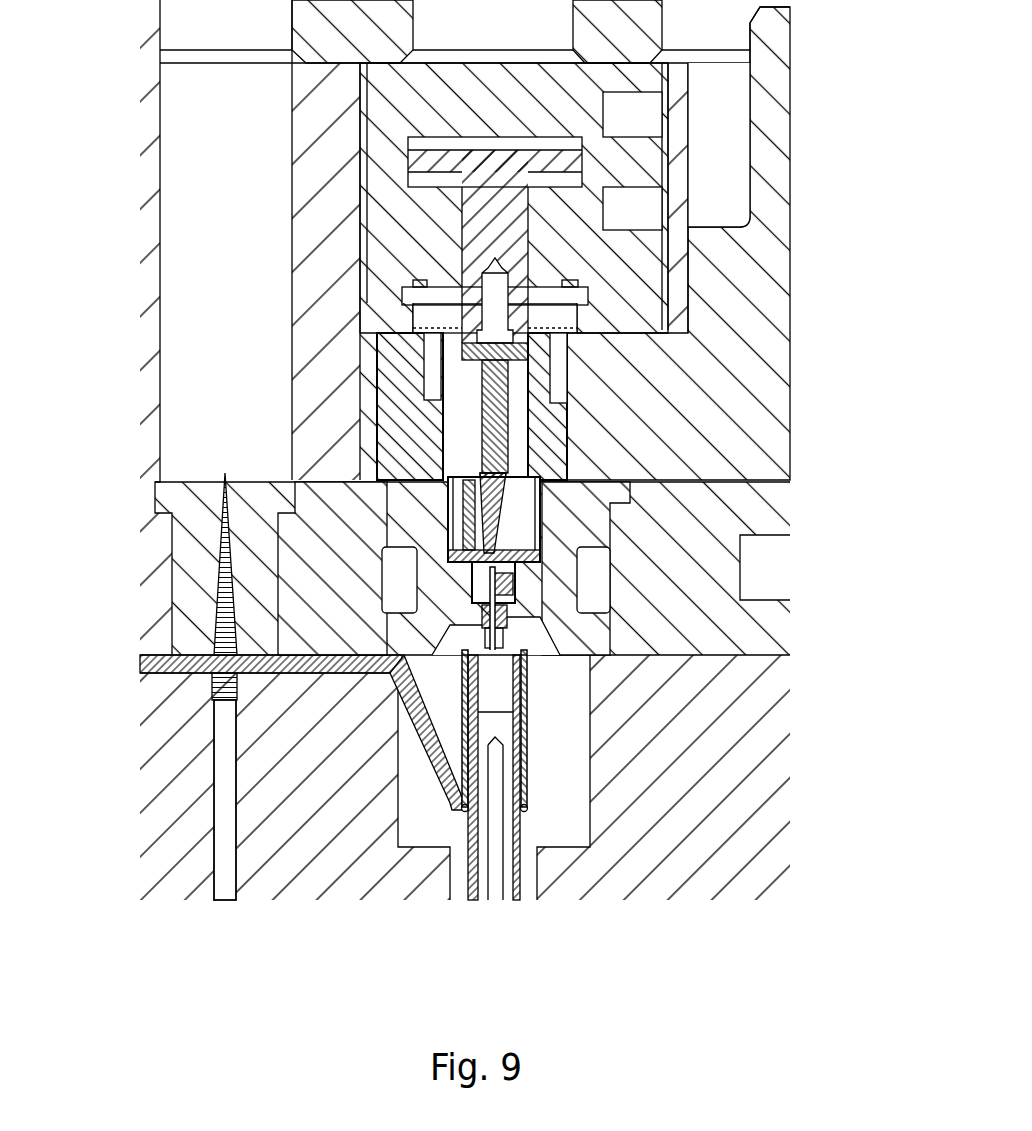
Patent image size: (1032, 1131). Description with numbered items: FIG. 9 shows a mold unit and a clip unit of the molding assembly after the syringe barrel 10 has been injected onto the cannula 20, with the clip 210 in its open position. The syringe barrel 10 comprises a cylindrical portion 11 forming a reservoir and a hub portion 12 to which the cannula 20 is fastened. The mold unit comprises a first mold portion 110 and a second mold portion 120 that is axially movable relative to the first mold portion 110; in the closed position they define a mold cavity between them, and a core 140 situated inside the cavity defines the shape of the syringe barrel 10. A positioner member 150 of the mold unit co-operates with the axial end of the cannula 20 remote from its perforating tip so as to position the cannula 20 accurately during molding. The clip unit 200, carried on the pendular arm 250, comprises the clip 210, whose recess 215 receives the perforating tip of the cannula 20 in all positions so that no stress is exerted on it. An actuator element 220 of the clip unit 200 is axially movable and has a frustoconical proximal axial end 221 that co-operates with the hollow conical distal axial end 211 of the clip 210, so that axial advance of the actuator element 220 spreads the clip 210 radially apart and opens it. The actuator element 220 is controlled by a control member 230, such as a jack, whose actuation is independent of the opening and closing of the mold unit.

The syringe barrel 10 is at (665, 775).
The cylindrical portion 11 is at (523, 687).
The hub portion 12 is at (540, 617).
The cannula 20 is at (520, 580).
The first mold portion 110 is at (722, 862).
The second mold portion 120 is at (713, 518).
The core 140 is at (460, 692).
The positioner member 150 is at (460, 668).
The clip unit 200 is at (470, 510).
The clip 210 is at (472, 600).
The distal axial end 211 is at (477, 483).
The recess 215 is at (515, 577).
The actuator element 220 is at (505, 432).
The frustoconical proximal axial end 221 is at (545, 447).
The control member 230 is at (495, 222).
The pendular arm 250 is at (598, 405).